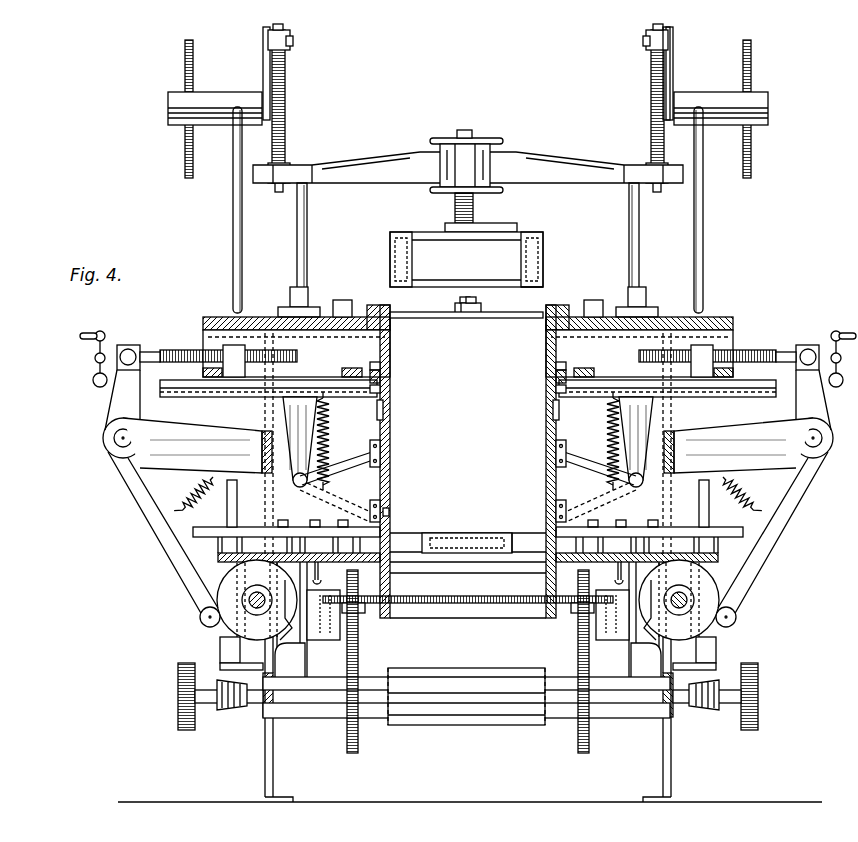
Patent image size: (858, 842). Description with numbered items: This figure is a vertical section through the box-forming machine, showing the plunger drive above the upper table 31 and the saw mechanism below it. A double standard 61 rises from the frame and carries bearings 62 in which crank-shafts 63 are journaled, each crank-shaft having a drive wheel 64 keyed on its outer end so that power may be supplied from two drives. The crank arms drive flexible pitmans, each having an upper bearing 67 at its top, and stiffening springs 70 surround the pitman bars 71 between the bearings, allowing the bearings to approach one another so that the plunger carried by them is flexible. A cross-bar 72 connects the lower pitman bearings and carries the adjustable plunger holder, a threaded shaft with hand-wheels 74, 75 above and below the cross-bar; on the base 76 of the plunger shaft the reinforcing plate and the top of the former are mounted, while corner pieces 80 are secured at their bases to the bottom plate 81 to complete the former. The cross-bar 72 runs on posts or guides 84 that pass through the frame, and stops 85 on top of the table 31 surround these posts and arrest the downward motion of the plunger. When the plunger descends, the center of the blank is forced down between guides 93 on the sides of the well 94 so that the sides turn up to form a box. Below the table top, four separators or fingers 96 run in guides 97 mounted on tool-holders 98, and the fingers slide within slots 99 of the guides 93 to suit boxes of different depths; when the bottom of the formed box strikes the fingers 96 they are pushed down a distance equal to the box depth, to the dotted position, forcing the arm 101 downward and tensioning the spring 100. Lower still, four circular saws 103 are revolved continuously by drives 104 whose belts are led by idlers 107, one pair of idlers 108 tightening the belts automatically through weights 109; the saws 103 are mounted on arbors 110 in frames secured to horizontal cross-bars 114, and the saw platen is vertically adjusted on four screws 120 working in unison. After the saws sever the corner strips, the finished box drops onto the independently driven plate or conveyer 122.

The upper table 31 is at (725, 316).
The double standard 61 is at (240, 224).
The bearings 62 is at (224, 100).
The crank-shafts 63 is at (285, 70).
The drive wheel 64 is at (190, 68).
The upper pitman bearing 67 is at (650, 99).
The stiffening springs 70 is at (286, 126).
The pitman bars 71 is at (286, 109).
The cross-bar 72 is at (554, 166).
The hand-wheel 74 is at (498, 138).
The hand-wheel 75 is at (503, 191).
The base of the plunger shaft 76 is at (503, 233).
The corner pieces 80 is at (530, 258).
The bottom plate 81 is at (543, 287).
The posts or guides 84 is at (307, 246).
The stops 85 is at (307, 294).
The guides 93 is at (390, 346).
The well 94 is at (468, 536).
The separators or fingers 96 is at (546, 364).
The guides 97 is at (546, 384).
The tool-holders 98 is at (304, 380).
The slots 99 is at (546, 398).
The spring 100 is at (331, 446).
The arm 101 is at (350, 466).
The circular saws 103 is at (468, 573).
The drives 104 is at (185, 523).
The idlers 107 is at (390, 512).
The idlers 108 is at (333, 527).
The weights 109 is at (520, 604).
The arbors 110 is at (454, 556).
The horizontal cross-bars 114 is at (501, 541).
The screws 120 is at (358, 626).
The plate or conveyer 122 is at (470, 668).